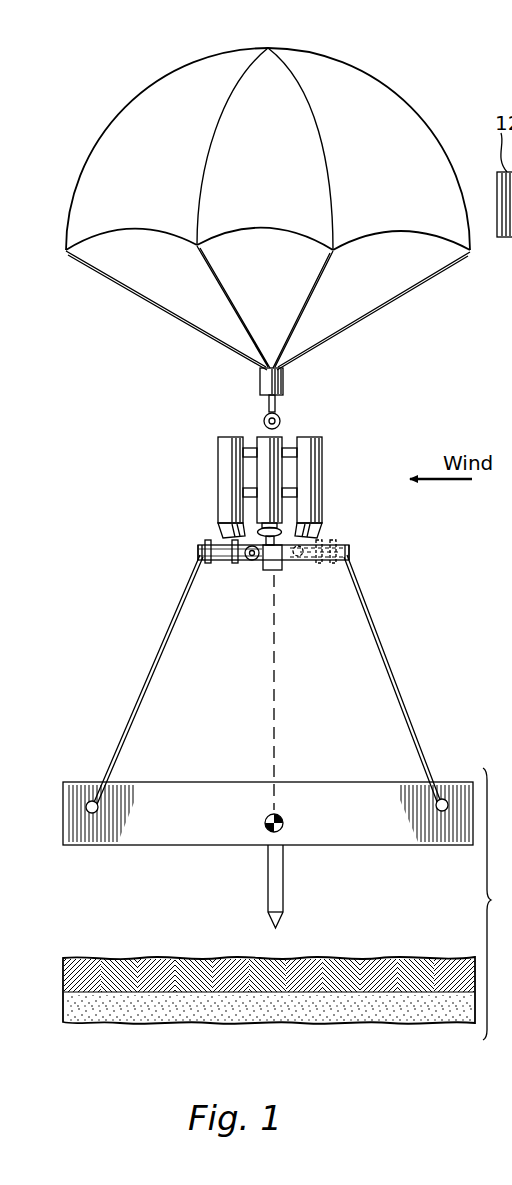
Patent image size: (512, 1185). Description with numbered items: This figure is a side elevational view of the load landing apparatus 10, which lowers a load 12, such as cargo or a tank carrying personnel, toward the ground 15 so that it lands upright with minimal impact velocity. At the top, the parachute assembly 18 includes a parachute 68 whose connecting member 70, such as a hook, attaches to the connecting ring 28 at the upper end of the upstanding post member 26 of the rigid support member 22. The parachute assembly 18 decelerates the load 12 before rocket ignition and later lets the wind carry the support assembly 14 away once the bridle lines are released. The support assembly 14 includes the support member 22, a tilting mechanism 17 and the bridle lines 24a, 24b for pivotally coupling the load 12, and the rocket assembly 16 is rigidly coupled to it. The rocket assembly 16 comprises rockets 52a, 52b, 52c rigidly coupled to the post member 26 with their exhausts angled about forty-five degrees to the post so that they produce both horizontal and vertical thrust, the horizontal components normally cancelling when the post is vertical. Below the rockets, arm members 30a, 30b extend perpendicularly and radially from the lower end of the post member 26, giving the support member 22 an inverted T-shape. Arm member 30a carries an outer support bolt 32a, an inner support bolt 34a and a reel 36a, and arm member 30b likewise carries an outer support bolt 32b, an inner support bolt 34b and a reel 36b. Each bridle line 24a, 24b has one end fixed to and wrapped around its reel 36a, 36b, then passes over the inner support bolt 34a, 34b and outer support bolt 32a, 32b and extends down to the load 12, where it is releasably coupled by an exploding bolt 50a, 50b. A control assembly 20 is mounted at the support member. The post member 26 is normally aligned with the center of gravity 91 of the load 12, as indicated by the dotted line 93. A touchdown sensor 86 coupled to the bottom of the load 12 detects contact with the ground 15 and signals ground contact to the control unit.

The load landing apparatus 10 is at (134, 66).
The parachute 68 is at (233, 48).
The parachute assembly 18 is at (164, 333).
The connecting ring 28 is at (262, 410).
The connecting member 70 is at (278, 408).
The upstanding post member 26 is at (262, 426).
The rocket assembly 16 is at (266, 470).
The rocket 52a is at (218, 478).
The rocket 52b is at (284, 437).
The rocket 52c is at (323, 452).
The tilting mechanism 17 is at (200, 536).
The rigid support member 22 is at (331, 540).
The support assembly 14 is at (265, 593).
The arm member 30a is at (205, 545).
The arm member 30b is at (350, 555).
The outer support bolt 32a is at (207, 562).
The outer support bolt 32b is at (333, 562).
The inner support bolt 34a is at (235, 563).
The inner support bolt 34b is at (320, 562).
The reel 36a is at (250, 562).
The reel 36b is at (300, 562).
The control assembly 20 is at (278, 575).
The dotted line 93 is at (275, 716).
The bridle line 24a is at (133, 718).
The bridle line 24b is at (415, 730).
The load 12 is at (268, 776).
The exploding bolt 50a is at (98, 806).
The exploding bolt 50b is at (437, 806).
The center of gravity 91 is at (280, 816).
The touchdown sensor 86 is at (285, 868).
The ground 15 is at (410, 946).